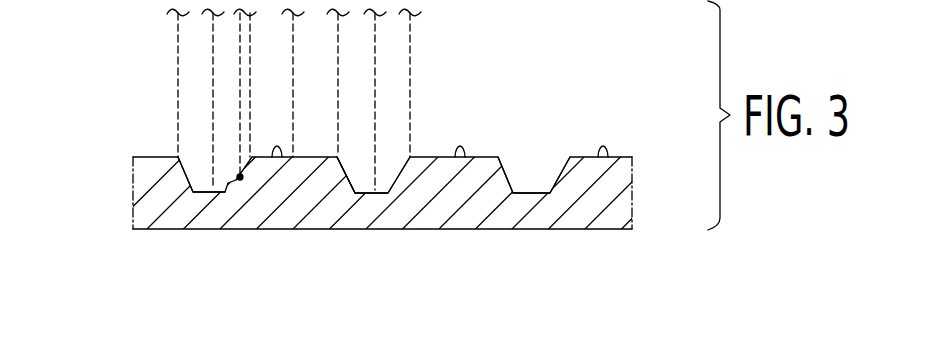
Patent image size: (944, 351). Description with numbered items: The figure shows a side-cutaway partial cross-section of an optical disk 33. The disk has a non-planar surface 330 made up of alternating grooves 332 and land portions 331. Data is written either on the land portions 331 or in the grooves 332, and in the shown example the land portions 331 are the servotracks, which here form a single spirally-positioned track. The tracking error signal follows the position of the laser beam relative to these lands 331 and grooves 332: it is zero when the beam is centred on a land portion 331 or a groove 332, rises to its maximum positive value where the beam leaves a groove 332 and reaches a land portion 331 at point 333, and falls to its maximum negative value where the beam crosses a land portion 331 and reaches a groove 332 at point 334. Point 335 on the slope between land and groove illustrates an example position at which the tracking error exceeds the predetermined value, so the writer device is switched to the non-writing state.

The optical disk 33 is at (538, 232).
The non-planar surface 330 is at (630, 143).
The land portions 331 is at (603, 147).
The grooves 332 is at (203, 185).
The point where beam reaches land portion 333 is at (252, 157).
The point where beam reaches groove 334 is at (337, 157).
The slope point 335 is at (240, 177).